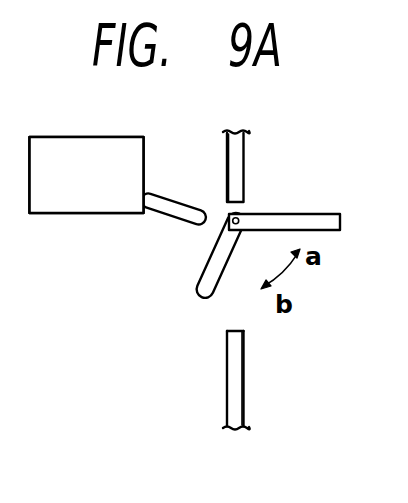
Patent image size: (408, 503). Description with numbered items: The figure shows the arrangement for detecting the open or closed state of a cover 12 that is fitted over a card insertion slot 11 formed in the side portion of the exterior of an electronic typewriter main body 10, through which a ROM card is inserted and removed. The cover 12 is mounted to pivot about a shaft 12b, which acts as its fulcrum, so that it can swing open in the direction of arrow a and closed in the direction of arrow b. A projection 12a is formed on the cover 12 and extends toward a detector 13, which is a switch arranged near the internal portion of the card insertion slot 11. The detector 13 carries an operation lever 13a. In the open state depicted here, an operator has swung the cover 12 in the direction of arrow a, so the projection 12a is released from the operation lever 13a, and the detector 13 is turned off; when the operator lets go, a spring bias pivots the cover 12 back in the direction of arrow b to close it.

The electronic typewriter main body 10 is at (238, 390).
The card insertion slot 11 is at (234, 331).
The cover 12 is at (311, 214).
The projection 12a is at (200, 279).
The shaft 12b is at (240, 217).
The detector 13 is at (47, 206).
The operation lever 13a is at (163, 212).